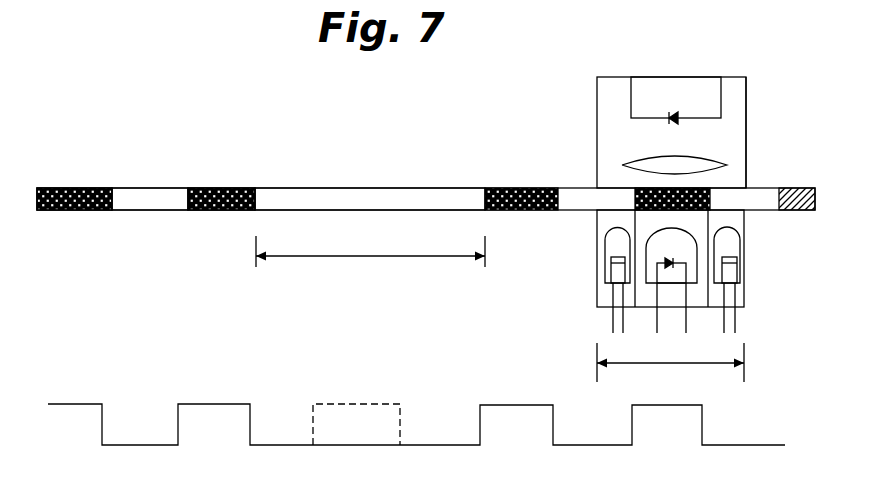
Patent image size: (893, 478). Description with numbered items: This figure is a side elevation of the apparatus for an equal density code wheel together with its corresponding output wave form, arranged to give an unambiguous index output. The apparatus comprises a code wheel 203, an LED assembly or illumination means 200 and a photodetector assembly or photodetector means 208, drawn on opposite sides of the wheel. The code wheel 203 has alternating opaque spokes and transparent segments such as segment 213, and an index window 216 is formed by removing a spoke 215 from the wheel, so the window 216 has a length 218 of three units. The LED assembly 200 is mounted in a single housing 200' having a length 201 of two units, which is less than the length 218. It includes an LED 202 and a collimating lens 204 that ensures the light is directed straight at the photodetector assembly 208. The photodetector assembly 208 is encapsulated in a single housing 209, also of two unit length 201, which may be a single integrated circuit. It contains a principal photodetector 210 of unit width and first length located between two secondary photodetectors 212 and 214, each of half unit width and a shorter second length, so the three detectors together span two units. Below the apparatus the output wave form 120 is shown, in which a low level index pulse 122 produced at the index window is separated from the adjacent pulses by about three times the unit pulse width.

The LED assembly 200 is at (718, 118).
The housing 200' is at (779, 132).
The LED 202 is at (631, 100).
The collimating lens 204 is at (622, 165).
The photodetector assembly 208 is at (755, 311).
The housing 209 is at (747, 279).
The principal photodetector 210 is at (670, 268).
The secondary photodetector 212 is at (617, 241).
The secondary photodetector 214 is at (738, 261).
The length 201 is at (697, 363).
The code wheel 203 is at (93, 233).
The transparent window 213 is at (156, 188).
The spoke 215 is at (208, 210).
The index window 216 is at (358, 190).
The length 218 is at (360, 257).
The wave form 120 is at (52, 414).
The index pulse 122 is at (275, 457).